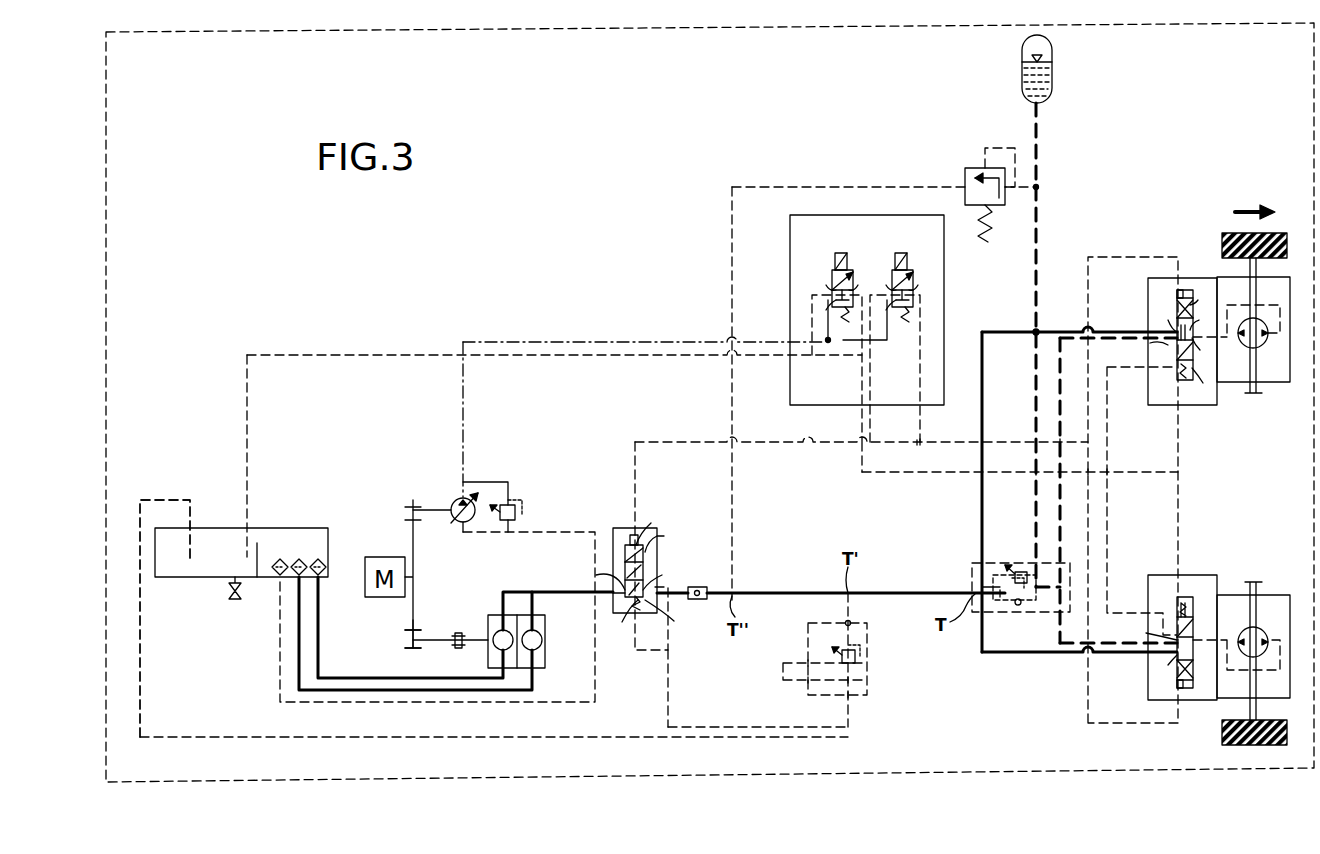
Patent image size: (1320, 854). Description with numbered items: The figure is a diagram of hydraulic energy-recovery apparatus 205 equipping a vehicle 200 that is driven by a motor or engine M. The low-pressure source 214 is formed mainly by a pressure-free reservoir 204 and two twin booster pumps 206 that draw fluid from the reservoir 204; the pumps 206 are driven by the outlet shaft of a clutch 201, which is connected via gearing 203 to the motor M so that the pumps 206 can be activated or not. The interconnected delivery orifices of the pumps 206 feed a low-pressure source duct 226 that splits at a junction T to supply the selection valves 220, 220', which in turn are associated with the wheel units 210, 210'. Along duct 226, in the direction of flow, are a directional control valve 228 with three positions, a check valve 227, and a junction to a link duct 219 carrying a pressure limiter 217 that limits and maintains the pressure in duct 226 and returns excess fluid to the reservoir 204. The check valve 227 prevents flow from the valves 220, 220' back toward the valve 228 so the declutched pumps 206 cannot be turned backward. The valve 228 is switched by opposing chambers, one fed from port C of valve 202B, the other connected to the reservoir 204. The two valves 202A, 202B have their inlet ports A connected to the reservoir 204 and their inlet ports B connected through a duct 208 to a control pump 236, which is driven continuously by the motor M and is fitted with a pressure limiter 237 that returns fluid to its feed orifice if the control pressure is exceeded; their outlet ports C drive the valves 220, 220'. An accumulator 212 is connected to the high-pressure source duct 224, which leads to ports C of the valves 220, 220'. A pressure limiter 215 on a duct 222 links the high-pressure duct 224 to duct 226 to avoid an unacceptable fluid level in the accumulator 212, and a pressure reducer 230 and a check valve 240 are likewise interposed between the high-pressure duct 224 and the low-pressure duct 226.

The vehicle 200 is at (230, 30).
The hydraulic energy-recovery apparatus 205 is at (1172, 88).
The accumulator 212 is at (1062, 70).
The pressure limiter 215 is at (968, 186).
The duct 222 is at (828, 187).
The high-pressure source duct 224 is at (1040, 235).
The valve 202A is at (832, 285).
The valve 202B is at (896, 285).
The duct 208 is at (562, 342).
The first wheel brake unit 210 is at (1219, 305).
The selection valve 220 is at (1163, 340).
The low-pressure source 214 is at (210, 478).
The pressure-free reservoir 204 is at (190, 578).
The control pump 236 is at (455, 504).
The pressure limiter 237 is at (520, 512).
The directional control valve 228 is at (620, 522).
The check valve 227 is at (697, 587).
The low-pressure source duct 226 is at (787, 593).
The pressure reducer 230 is at (1012, 572).
The check valve 240 is at (1018, 606).
The gearing 203 is at (405, 638).
The clutch 201 is at (448, 627).
The twin booster pumps 206 is at (514, 630).
The pressure limiter 217 is at (860, 654).
The link duct 219 is at (850, 712).
The selection valve 220' is at (1146, 649).
The second wheel brake unit 210' is at (1219, 666).